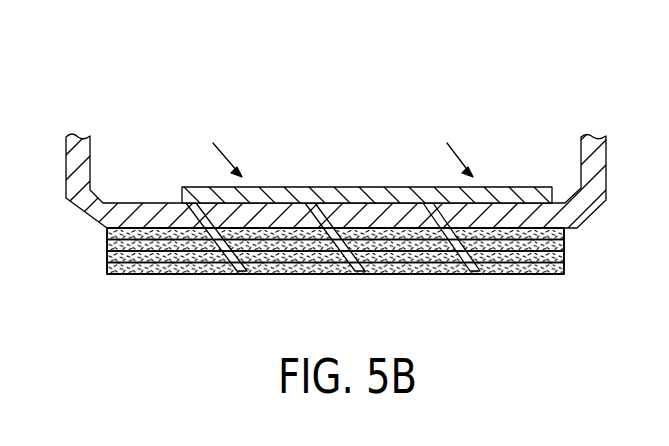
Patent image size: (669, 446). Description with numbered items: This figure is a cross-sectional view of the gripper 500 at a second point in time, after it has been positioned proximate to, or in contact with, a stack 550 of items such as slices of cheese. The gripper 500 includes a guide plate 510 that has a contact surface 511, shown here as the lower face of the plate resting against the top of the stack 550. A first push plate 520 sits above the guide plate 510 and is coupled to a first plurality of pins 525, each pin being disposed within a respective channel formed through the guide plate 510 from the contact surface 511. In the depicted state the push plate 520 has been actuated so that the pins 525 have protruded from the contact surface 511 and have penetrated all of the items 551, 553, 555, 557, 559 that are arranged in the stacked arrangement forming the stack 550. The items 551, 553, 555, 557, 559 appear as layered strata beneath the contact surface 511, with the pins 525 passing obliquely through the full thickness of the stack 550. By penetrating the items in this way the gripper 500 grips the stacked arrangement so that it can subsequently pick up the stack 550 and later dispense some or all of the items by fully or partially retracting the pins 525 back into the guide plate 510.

The gripper 500 is at (522, 100).
The guide plate 510 is at (608, 160).
The contact surface 511 is at (185, 228).
The first push plate 520 is at (287, 187).
The first plurality of pins 525 is at (233, 270).
The stack of items 550 is at (542, 290).
The item 551 is at (564, 273).
The item 553 is at (114, 262).
The item 555 is at (564, 255).
The item 557 is at (112, 240).
The item 559 is at (564, 232).